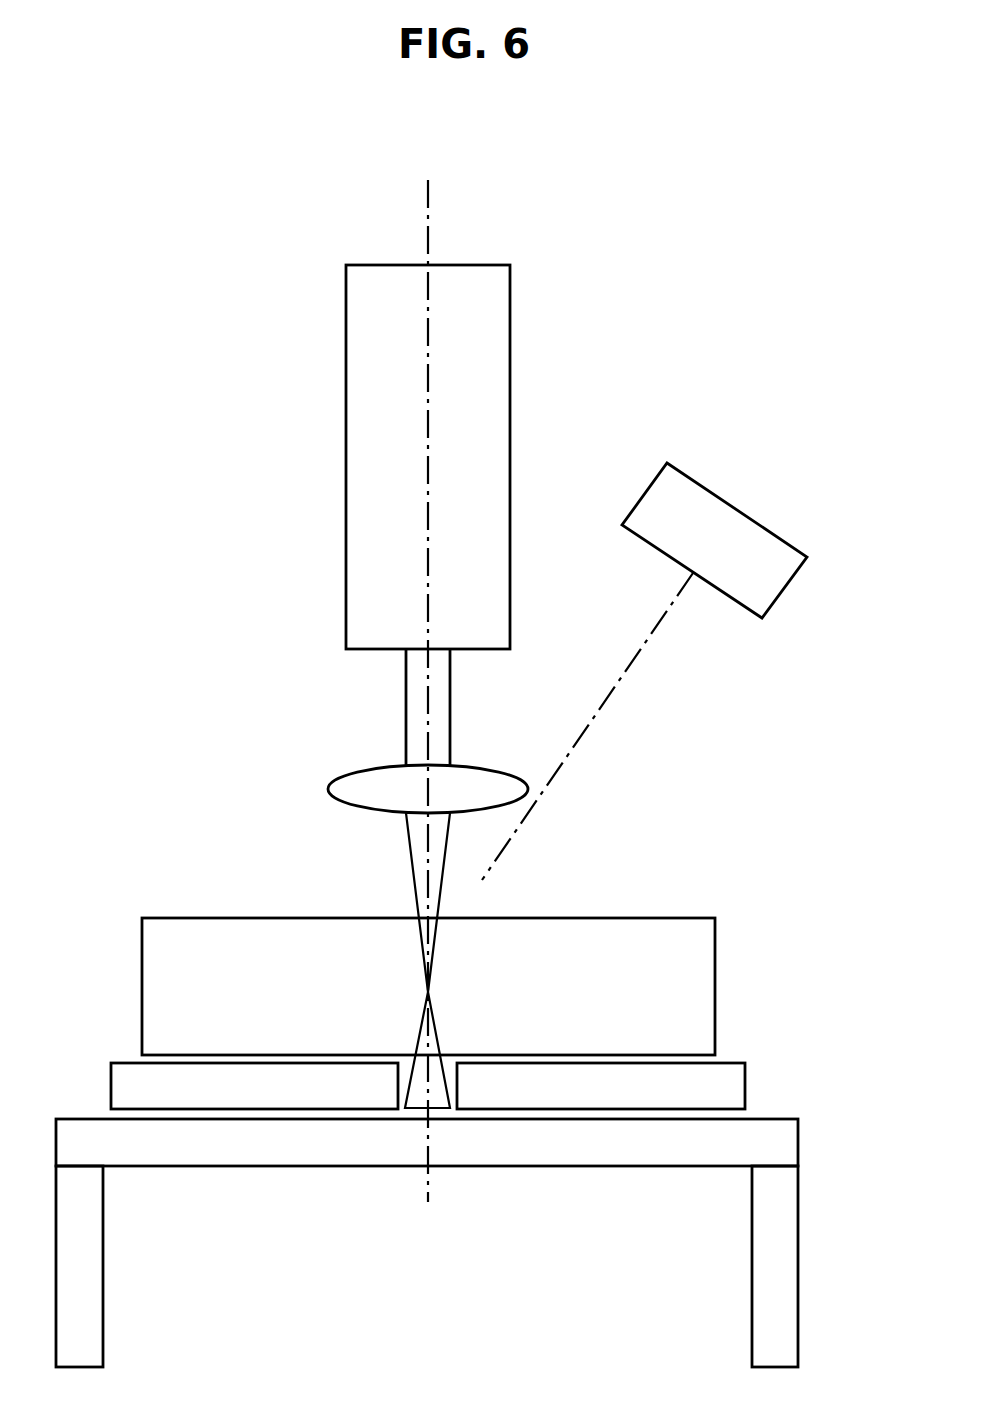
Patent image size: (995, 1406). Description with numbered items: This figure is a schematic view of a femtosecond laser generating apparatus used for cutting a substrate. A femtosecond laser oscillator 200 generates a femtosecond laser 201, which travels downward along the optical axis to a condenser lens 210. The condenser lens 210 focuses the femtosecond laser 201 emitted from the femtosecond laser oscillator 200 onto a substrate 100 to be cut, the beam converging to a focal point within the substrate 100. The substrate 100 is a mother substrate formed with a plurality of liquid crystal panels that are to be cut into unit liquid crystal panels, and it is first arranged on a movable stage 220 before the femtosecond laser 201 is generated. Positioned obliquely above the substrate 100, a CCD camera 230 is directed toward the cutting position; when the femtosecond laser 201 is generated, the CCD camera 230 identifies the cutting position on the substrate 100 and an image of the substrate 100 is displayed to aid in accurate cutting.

The substrate 100 is at (676, 993).
The femtosecond laser oscillator 200 is at (475, 362).
The femtosecond laser 201 is at (445, 710).
The condenser lens 210 is at (358, 790).
The movable stage 220 is at (727, 1087).
The CCD camera 230 is at (722, 513).